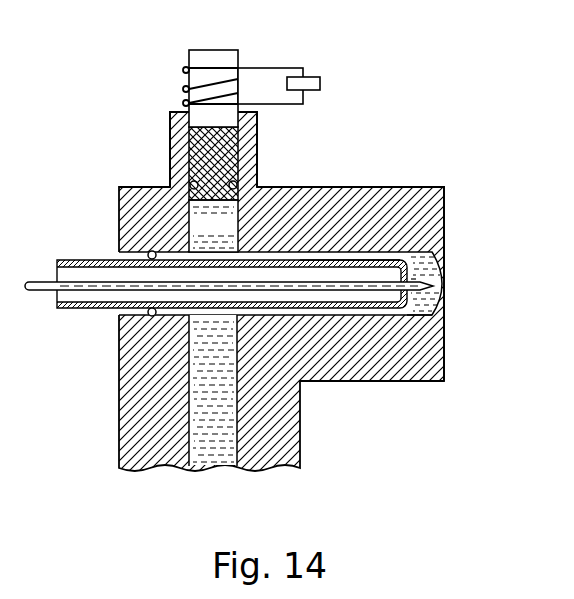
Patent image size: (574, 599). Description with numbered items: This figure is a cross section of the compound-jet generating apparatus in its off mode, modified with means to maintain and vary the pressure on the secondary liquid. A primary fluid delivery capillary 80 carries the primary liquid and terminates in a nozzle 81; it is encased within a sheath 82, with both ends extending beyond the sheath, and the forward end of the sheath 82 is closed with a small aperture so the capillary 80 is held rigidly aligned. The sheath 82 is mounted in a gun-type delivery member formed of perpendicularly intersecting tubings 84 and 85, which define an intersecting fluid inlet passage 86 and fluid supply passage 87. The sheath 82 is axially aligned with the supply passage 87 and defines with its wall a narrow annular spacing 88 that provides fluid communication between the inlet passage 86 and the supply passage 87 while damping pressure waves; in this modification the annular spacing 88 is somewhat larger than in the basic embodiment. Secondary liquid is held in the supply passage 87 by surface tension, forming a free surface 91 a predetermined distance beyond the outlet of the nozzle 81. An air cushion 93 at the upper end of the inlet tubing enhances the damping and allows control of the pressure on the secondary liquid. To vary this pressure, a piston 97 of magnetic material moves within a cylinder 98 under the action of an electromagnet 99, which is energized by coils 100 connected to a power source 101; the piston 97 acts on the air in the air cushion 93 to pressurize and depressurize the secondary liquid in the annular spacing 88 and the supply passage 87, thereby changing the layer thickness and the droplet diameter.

The primary fluid delivery capillary 80 is at (303, 280).
The nozzle 81 is at (437, 277).
The sheath 82 is at (423, 233).
The tubing 84 is at (147, 398).
The tubing 85 is at (278, 213).
The fluid inlet passage 86 is at (210, 455).
The fluid supply passage 87 is at (420, 312).
The annular spacing 88 is at (362, 257).
The free surface 91 is at (445, 305).
The air cushion 93 is at (213, 226).
The piston 97 is at (213, 140).
The cylinder 98 is at (175, 173).
The electromagnet 99 is at (218, 55).
The coils 100 is at (258, 68).
The power source 101 is at (315, 82).